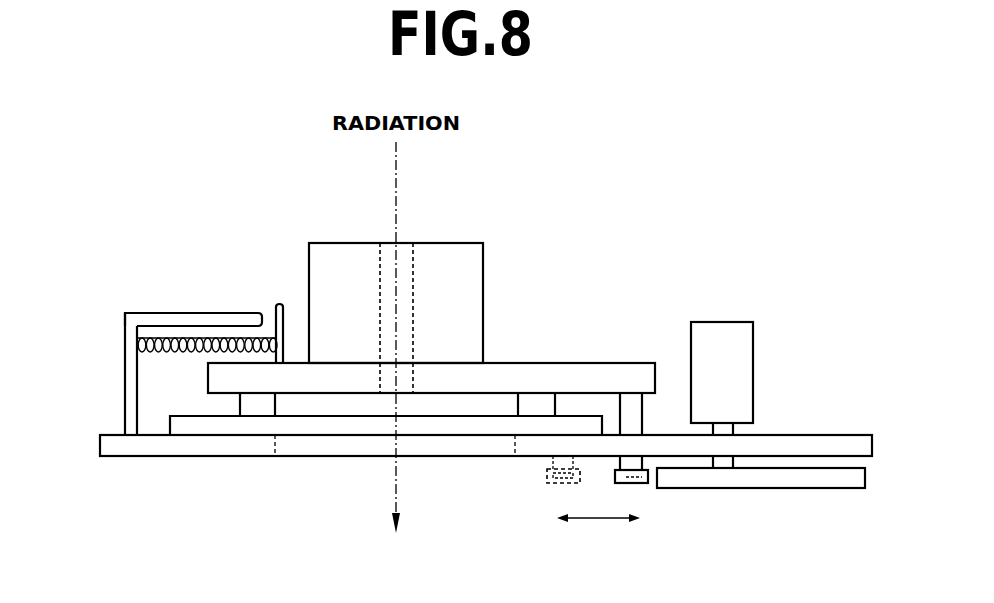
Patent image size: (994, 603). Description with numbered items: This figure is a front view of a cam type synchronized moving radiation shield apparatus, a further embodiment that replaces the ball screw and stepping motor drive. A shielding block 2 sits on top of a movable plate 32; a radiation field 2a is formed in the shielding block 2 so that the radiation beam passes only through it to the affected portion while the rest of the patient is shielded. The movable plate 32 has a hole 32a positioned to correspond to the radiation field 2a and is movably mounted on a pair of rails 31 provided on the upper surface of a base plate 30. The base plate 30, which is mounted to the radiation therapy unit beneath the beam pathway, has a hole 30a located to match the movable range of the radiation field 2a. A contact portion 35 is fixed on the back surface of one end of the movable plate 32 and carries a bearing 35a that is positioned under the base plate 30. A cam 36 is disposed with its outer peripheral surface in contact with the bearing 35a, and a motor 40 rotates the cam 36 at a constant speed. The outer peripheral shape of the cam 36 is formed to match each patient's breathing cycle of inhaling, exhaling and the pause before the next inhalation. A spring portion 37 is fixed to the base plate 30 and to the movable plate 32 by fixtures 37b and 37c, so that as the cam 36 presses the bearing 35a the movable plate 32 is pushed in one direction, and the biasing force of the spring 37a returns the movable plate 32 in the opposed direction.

The shielding block 2 is at (472, 288).
The radiation field 2a is at (405, 278).
The base plate 30 is at (247, 447).
The hole 30a is at (460, 443).
The rails 31 is at (195, 428).
The movable plate 32 is at (613, 373).
The hole 32a is at (383, 372).
The contact portion 35 is at (652, 410).
The bearing 35a is at (642, 483).
The cam 36 is at (825, 480).
The spring portion 37 is at (174, 321).
The spring 37a is at (193, 338).
The fixture 37b is at (132, 380).
The fixture 37c is at (273, 307).
The motor 40 is at (742, 357).